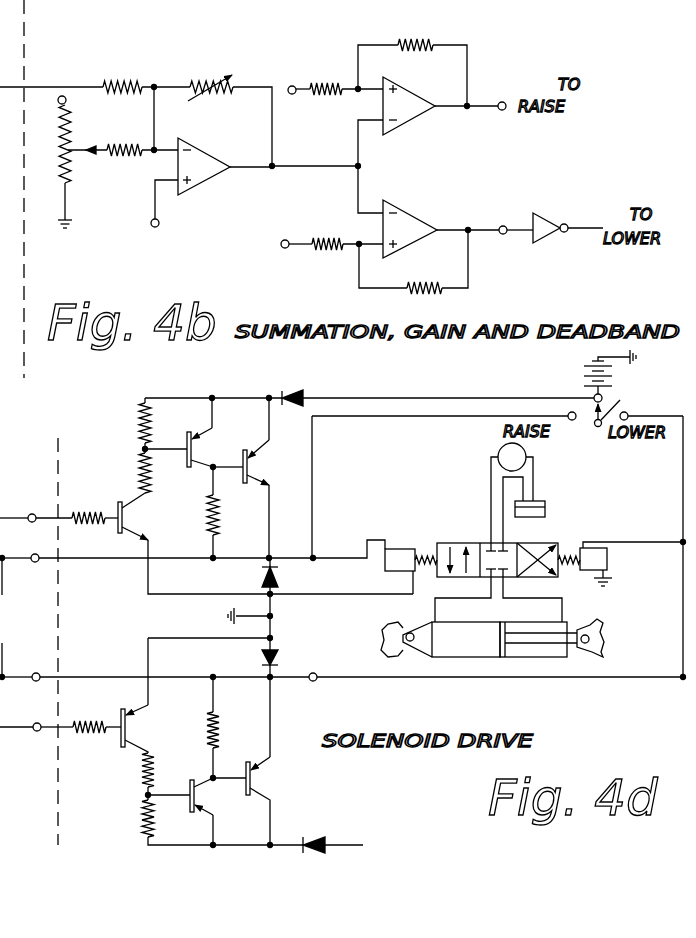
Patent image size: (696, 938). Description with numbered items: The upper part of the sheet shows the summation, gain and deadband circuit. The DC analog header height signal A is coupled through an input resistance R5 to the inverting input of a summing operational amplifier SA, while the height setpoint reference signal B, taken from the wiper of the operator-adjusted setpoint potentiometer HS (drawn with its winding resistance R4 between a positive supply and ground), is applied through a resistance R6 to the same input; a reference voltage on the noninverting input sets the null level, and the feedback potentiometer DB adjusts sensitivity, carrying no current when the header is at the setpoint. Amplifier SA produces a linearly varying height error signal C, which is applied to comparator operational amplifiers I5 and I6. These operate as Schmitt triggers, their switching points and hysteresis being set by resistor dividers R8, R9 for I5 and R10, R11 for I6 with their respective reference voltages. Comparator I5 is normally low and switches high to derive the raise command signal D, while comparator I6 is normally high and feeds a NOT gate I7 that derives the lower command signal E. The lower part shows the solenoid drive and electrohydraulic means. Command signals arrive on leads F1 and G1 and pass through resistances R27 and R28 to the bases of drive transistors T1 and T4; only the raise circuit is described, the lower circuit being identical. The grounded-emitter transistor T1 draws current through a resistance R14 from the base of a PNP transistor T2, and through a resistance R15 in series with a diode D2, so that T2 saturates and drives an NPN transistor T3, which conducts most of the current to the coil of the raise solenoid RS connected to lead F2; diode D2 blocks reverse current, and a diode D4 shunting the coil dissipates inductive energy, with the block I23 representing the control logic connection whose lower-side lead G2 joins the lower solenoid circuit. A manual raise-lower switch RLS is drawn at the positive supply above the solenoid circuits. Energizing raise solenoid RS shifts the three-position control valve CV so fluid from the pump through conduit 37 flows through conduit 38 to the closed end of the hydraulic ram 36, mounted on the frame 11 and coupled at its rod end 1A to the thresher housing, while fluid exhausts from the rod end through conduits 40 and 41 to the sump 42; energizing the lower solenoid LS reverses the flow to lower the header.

In FIG. 4B, the header height signal A is at (39, 84).
In FIG. 4B, the input resistance R5 is at (122, 80).
In FIG. 4B, the height setpoint reference signal B is at (93, 146).
In FIG. 4B, the setpoint selecting potentiometer HS is at (62, 184).
In FIG. 4B, the potentiometer resistor R4 is at (72, 186).
In FIG. 4B, the resistance R6 is at (122, 158).
In FIG. 4B, the feedback potentiometer DB is at (222, 96).
In FIG. 4B, the summing operational amplifier SA is at (212, 177).
In FIG. 4B, the height error signal C is at (245, 164).
In FIG. 4B, the resistor R8 is at (325, 97).
In FIG. 4B, the resistor R9 is at (418, 38).
In FIG. 4B, the comparator operational amplifier I5 is at (415, 122).
In FIG. 4B, the raise command signal D is at (490, 103).
In FIG. 4B, the comparator operational amplifier I6 is at (432, 200).
In FIG. 4B, the resistor R10 is at (328, 237).
In FIG. 4B, the resistor R11 is at (426, 282).
In FIG. 4B, the NOT gate I7 is at (538, 213).
In FIG. 4B, the lower command signal E is at (584, 225).
In FIG. 4D, the diode D2 is at (306, 394).
In FIG. 4D, the raise-lower switch RLS is at (616, 402).
In FIG. 4D, the resistance R15 is at (137, 432).
In FIG. 4D, the resistance R14 is at (138, 478).
In FIG. 4D, the PNP transistor T2 is at (188, 434).
In FIG. 4D, the NPN transistor T3 is at (258, 468).
In FIG. 4D, the base drive transistor T1 is at (129, 512).
In FIG. 4D, the lead F1 is at (42, 512).
In FIG. 4D, the resistance R27 is at (88, 526).
In FIG. 4D, the lead F2 is at (35, 566).
In FIG. 4D, the circuit block I23 is at (12, 617).
In FIG. 4D, the diode D4 is at (282, 574).
In FIG. 4D, the terminal G2 is at (42, 650).
In FIG. 4D, the lead G1 is at (44, 732).
In FIG. 4D, the resistance R28 is at (90, 719).
In FIG. 4D, the drive transistor T4 is at (120, 743).
In FIG. 4D, the raise solenoid RS is at (400, 546).
In FIG. 4D, the control valve CV is at (460, 542).
In FIG. 4D, the conduit 37 is at (498, 462).
In FIG. 4D, the conduit 41 is at (491, 488).
In FIG. 4D, the sump 42 is at (548, 510).
In FIG. 4D, the lower solenoid LS is at (609, 556).
In FIG. 4D, the conduit 38 is at (435, 604).
In FIG. 4D, the conduit 40 is at (565, 610).
In FIG. 4D, the hydraulic ram 36 is at (478, 660).
In FIG. 4D, the piston rod clevis 1A is at (604, 634).
In FIG. 4D, the frame 11 is at (384, 646).